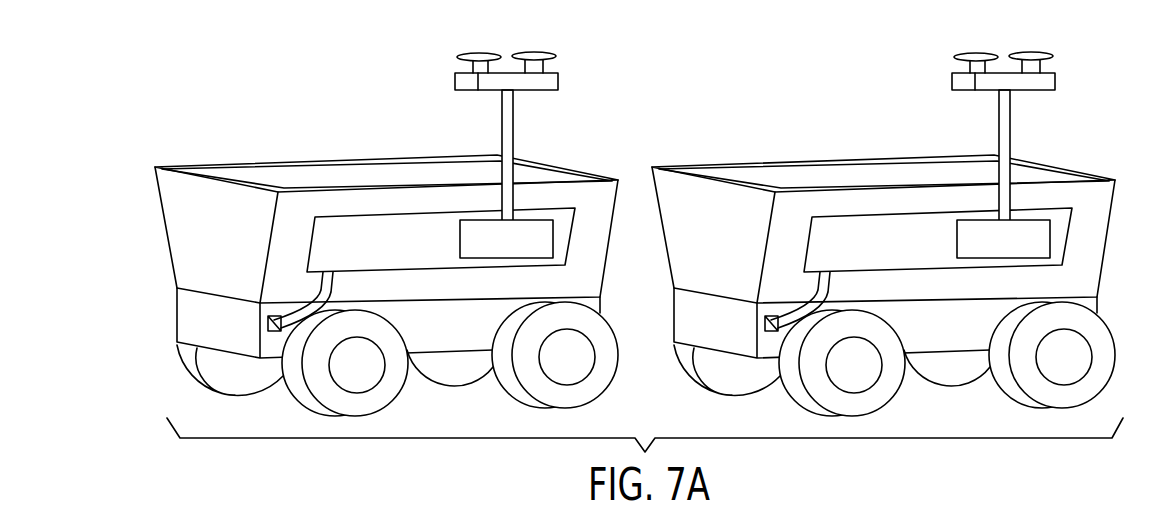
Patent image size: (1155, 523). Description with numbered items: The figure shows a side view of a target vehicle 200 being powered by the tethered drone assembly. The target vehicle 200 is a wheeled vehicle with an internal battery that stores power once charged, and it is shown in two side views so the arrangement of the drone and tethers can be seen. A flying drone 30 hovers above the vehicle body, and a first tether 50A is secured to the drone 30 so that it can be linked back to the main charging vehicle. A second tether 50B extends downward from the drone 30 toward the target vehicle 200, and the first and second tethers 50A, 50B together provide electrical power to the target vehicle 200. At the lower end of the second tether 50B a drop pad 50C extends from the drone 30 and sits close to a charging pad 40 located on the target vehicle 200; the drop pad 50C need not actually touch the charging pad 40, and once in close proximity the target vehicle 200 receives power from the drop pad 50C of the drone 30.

The target vehicle 200 is at (229, 226).
The drone 30 is at (558, 80).
The first tether 50A is at (468, 90).
The second tether 50B is at (515, 130).
The drop pad 50C is at (553, 237).
The charging pad 40 is at (422, 250).